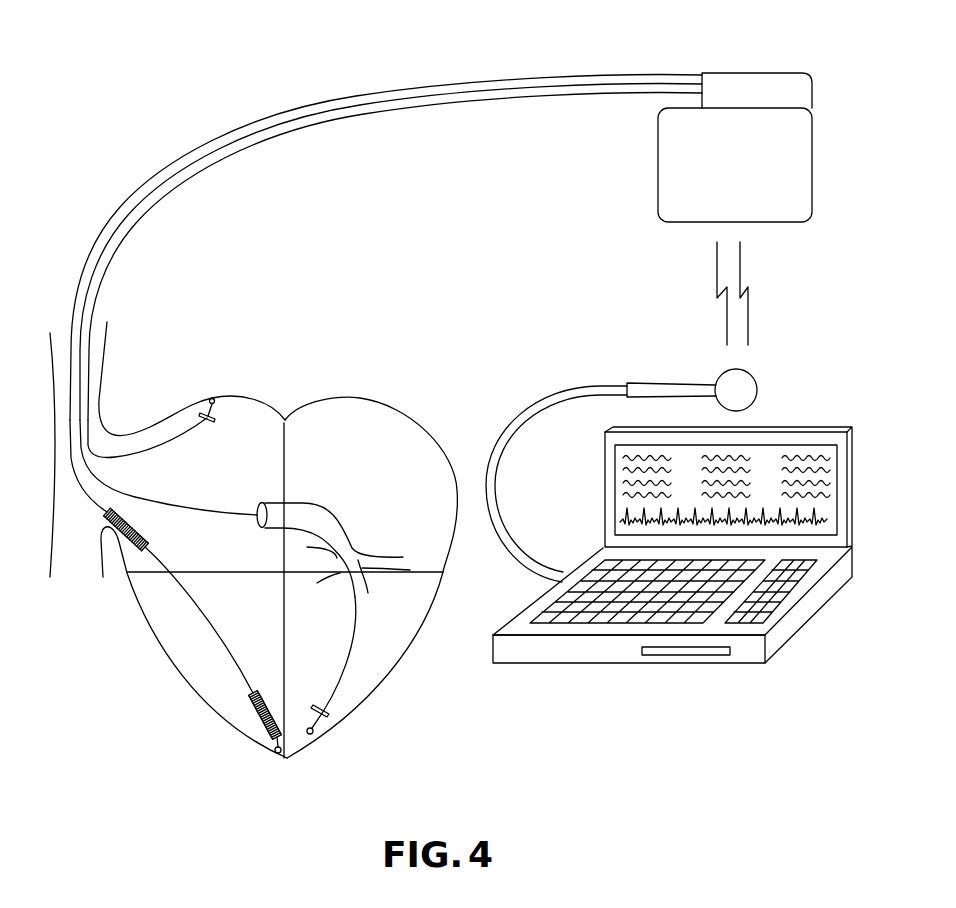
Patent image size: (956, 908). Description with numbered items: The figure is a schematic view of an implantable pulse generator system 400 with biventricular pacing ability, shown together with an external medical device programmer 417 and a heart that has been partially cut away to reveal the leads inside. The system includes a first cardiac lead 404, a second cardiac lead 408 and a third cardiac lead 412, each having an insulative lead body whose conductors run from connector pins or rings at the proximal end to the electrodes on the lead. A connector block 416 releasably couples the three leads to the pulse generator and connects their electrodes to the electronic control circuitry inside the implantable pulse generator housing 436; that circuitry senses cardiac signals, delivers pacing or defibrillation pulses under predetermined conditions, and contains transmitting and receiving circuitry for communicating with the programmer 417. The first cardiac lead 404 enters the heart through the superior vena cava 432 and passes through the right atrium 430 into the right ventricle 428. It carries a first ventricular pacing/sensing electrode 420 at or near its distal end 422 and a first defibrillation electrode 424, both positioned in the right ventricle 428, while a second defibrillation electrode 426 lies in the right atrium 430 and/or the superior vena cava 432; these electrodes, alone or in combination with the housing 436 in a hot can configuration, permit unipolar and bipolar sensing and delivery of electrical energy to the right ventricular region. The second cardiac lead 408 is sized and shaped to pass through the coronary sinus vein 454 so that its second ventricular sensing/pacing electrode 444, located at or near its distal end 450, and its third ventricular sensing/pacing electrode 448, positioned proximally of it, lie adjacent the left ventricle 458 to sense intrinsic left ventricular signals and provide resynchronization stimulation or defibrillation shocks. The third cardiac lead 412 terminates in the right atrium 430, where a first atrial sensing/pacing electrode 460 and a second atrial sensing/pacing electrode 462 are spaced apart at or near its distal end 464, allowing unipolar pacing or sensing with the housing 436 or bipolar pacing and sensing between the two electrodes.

The implantable pulse generator system 400 is at (135, 78).
The first cardiac lead 404 is at (327, 102).
The second cardiac lead 408 is at (366, 105).
The third cardiac lead 412 is at (278, 134).
The connector block 416 is at (813, 97).
The implantable pulse generator housing 436 is at (813, 160).
The external medical device programmer 417 is at (808, 624).
The superior vena cava 432 is at (57, 490).
The right atrium 430 is at (168, 423).
The distal end of third cardiac lead 464 is at (210, 399).
The first atrial sensing/pacing electrode 460 is at (217, 413).
The second atrial sensing/pacing electrode 462 is at (208, 421).
The coronary sinus vein 454 is at (257, 508).
The second defibrillation electrode 426 is at (136, 527).
The right ventricle 428 is at (180, 642).
The left ventricle 458 is at (400, 640).
The first defibrillation electrode 424 is at (256, 715).
The first ventricular pacing/sensing electrode 420 is at (272, 757).
The distal end of first cardiac lead 422 is at (286, 760).
The second ventricular sensing/pacing electrode 444 is at (313, 737).
The distal end of second cardiac lead 450 is at (320, 732).
The third ventricular sensing/pacing electrode 448 is at (335, 708).